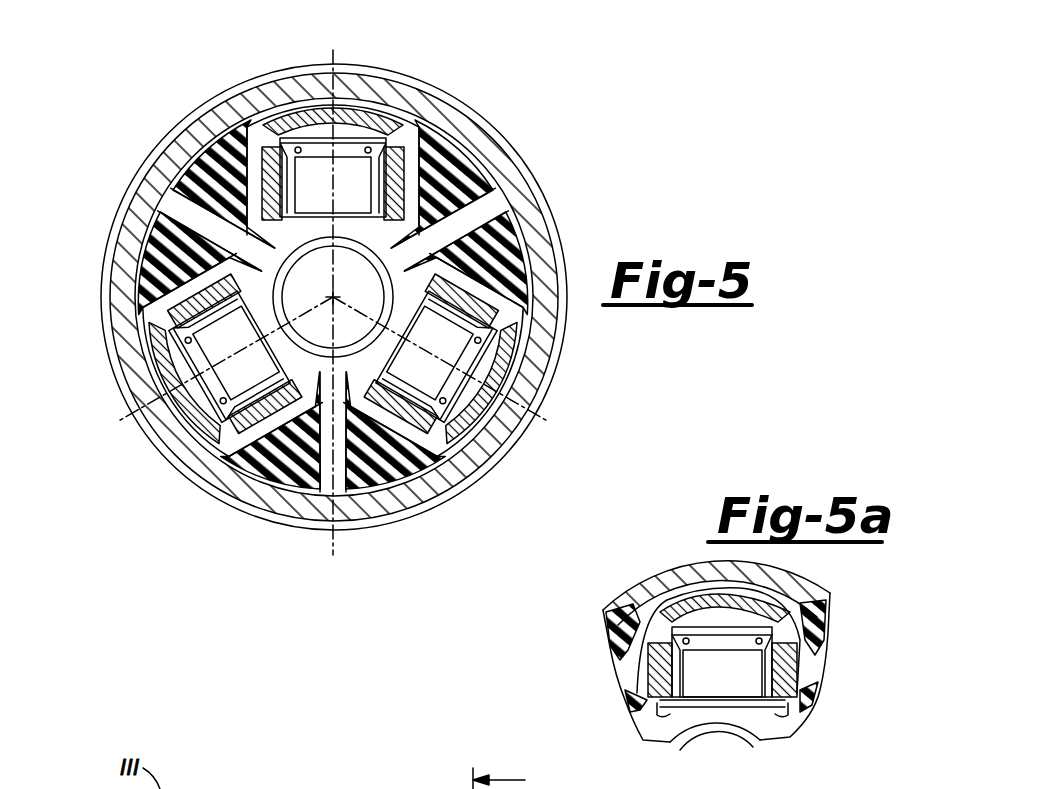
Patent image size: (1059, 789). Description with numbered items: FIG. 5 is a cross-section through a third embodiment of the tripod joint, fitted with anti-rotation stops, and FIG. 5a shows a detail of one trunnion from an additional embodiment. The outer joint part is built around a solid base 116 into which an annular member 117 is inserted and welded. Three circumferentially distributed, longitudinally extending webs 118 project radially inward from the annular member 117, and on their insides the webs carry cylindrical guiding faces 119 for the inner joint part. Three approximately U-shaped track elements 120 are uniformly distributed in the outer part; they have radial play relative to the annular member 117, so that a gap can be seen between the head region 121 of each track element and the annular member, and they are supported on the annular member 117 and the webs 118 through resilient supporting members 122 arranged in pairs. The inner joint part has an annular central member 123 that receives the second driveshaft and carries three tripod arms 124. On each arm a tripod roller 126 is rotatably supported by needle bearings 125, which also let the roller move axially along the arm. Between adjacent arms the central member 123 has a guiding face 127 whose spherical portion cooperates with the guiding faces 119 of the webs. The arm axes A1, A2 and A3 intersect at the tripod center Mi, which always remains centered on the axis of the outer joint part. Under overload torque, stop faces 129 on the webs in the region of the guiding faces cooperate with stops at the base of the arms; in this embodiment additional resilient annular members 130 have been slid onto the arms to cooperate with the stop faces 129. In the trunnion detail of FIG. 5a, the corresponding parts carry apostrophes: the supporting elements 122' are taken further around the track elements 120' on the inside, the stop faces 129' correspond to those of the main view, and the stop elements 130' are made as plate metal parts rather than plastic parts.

In FIG. 5, the solid base 116 is at (190, 147).
In FIG. 5, the annular member 117 is at (243, 112).
In FIG. 5, the webs 118 is at (327, 460).
In FIG. 5, the guiding faces 119 is at (338, 460).
In FIG. 5, the track elements 120 is at (373, 149).
In FIG. 5, the head region 121 is at (360, 112).
In FIG. 5, the resilient supporting members 122 is at (477, 173).
In FIG. 5, the annular central member 123 is at (265, 467).
In FIG. 5, the tripod arms 124 is at (400, 383).
In FIG. 5, the needle bearings 125 is at (448, 497).
In FIG. 5, the tripod rollers 126 is at (398, 470).
In FIG. 5, the guiding face 127 is at (283, 455).
In FIG. 5, the stop faces 129 is at (179, 202).
In FIG. 5, the resilient annular members 130 is at (163, 249).
In FIG. 5, the arm axis A1 is at (331, 60).
In FIG. 5, the arm axis A2 is at (552, 418).
In FIG. 5, the arm axis A3 is at (124, 422).
In FIG. 5, the center of the tripod Mi is at (332, 298).
In FIG. 5a, the track elements 120' is at (677, 646).
In FIG. 5a, the supporting elements 122' is at (599, 672).
In FIG. 5a, the stop faces 129' is at (841, 665).
In FIG. 5a, the stop elements 130' is at (759, 751).